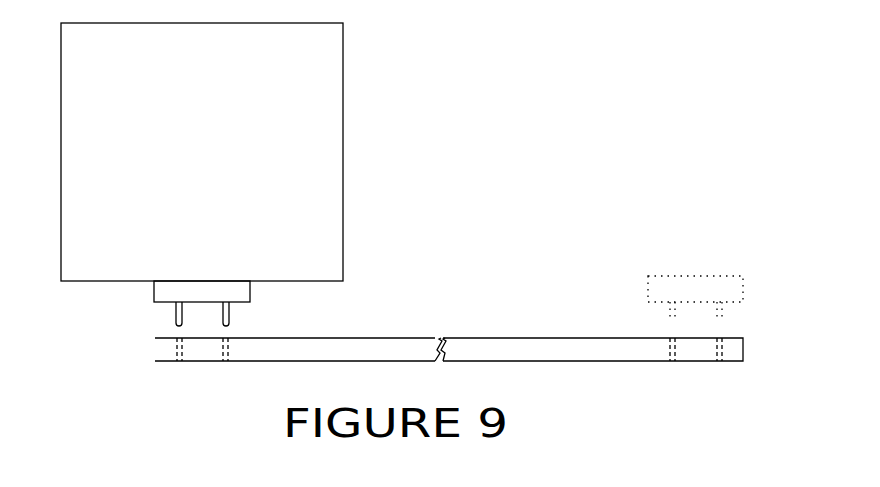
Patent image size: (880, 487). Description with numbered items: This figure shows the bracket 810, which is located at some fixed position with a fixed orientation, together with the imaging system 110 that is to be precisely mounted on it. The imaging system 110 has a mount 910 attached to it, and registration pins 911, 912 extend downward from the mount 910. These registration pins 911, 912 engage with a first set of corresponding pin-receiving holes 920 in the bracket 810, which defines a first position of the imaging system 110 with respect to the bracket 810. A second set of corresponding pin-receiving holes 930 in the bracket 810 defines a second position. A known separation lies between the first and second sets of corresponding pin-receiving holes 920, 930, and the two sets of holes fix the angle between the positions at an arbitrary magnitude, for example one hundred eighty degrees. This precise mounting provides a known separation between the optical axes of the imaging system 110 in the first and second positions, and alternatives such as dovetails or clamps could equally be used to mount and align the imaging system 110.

The imaging system 110 is at (343, 126).
The bracket 810 is at (513, 339).
The mount 910 is at (250, 290).
The registration pin 911 is at (172, 322).
The registration pin 912 is at (233, 320).
The first set of corresponding pin-receiving holes 920 is at (228, 361).
The second set of corresponding pin-receiving holes 930 is at (671, 361).